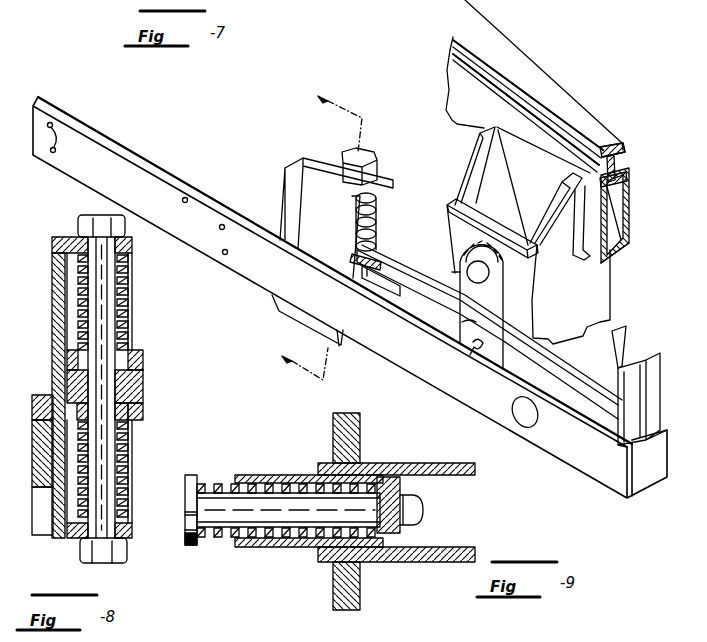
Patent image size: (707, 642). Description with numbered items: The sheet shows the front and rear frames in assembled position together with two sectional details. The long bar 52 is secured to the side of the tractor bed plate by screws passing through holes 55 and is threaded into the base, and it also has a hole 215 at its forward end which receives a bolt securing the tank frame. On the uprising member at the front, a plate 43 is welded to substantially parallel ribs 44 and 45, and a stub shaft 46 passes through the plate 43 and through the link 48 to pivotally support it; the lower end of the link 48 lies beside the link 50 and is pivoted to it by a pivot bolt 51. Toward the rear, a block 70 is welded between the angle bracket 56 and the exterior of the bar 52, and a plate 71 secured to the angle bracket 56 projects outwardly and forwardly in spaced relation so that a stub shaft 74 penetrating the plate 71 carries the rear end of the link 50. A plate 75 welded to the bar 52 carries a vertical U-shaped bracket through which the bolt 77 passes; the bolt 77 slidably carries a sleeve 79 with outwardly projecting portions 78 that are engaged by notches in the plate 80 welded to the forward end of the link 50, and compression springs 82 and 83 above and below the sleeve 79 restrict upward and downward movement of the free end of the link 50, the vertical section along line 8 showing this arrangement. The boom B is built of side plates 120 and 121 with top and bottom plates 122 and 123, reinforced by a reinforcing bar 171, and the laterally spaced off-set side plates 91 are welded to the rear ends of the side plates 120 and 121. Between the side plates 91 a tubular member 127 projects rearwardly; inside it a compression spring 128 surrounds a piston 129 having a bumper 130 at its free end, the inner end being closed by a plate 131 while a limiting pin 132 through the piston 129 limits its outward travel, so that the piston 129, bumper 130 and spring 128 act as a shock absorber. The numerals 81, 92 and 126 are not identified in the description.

In FIG. 7, the section line 8— 8 is at (313, 233).
In FIG. 7, the plate 43 is at (474, 204).
In FIG. 7, the rib 44 is at (561, 195).
In FIG. 7, the rib 45 is at (472, 165).
In FIG. 7, the stub shaft 46 is at (478, 283).
In FIG. 7, the link 48 is at (454, 321).
In FIG. 7, the link 50 is at (408, 280).
In FIG. 7, the pivot bolt 51 is at (484, 342).
In FIG. 7, the bar 52 is at (443, 391).
In FIG. 8, the bar 52 is at (32, 458).
In FIG. 7, the hole 55 is at (224, 249).
In FIG. 7, the angle bracket 56 is at (660, 392).
In FIG. 7, the block 70 is at (600, 358).
In FIG. 7, the plate 71 is at (558, 352).
In FIG. 7, the stub shaft 74 is at (537, 415).
In FIG. 8, the plate 75 is at (53, 283).
In FIG. 7, the bolt 77 is at (362, 154).
In FIG. 8, the bolt 77 is at (97, 216).
In FIG. 8, the outwardly projecting portion 78 is at (67, 386).
In FIG. 8, the sleeve 79 is at (143, 364).
In FIG. 7, the plate 80 is at (374, 252).
In FIG. 8, the plate 80 is at (67, 358).
In FIG. 7, the plate 81 is at (400, 300).
In FIG. 7, the compression spring 82 is at (374, 200).
In FIG. 8, the compression spring 82 is at (132, 306).
In FIG. 8, the compression spring 83 is at (132, 488).
In FIG. 9, the side plate 91 is at (415, 463).
In FIG. 9, the lower plate 92 is at (442, 562).
In FIG. 7, the side plate 120 is at (630, 218).
In FIG. 7, the side plate 121 is at (590, 258).
In FIG. 7, the top plate 122 is at (625, 160).
In FIG. 7, the bottom plate 123 is at (615, 258).
In FIG. 9, the flange block 126 is at (352, 437).
In FIG. 9, the tubular member 127 is at (268, 476).
In FIG. 9, the compression spring 128 is at (212, 484).
In FIG. 9, the piston 129 is at (212, 537).
In FIG. 9, the bumper 130 is at (183, 535).
In FIG. 9, the plate 131 is at (395, 479).
In FIG. 9, the limiting pin 132 is at (424, 514).
In FIG. 7, the reinforcing plate or bar 171 is at (542, 46).
In FIG. 7, the hole 215 is at (67, 141).
In FIG. 7, the boom B is at (631, 192).